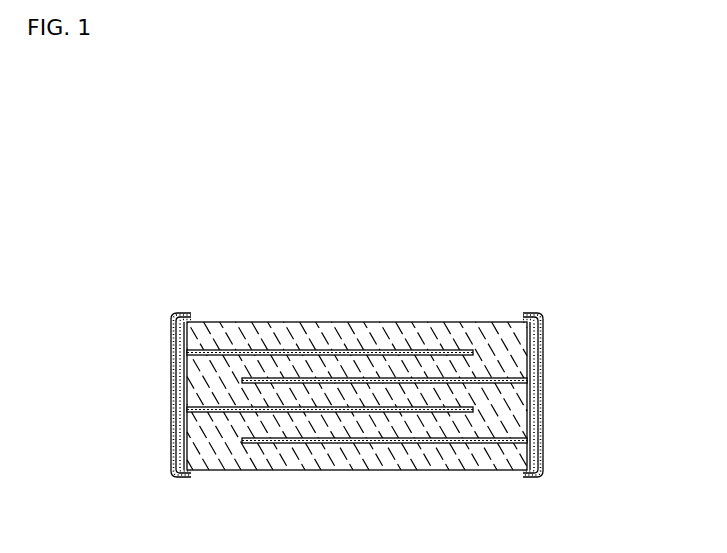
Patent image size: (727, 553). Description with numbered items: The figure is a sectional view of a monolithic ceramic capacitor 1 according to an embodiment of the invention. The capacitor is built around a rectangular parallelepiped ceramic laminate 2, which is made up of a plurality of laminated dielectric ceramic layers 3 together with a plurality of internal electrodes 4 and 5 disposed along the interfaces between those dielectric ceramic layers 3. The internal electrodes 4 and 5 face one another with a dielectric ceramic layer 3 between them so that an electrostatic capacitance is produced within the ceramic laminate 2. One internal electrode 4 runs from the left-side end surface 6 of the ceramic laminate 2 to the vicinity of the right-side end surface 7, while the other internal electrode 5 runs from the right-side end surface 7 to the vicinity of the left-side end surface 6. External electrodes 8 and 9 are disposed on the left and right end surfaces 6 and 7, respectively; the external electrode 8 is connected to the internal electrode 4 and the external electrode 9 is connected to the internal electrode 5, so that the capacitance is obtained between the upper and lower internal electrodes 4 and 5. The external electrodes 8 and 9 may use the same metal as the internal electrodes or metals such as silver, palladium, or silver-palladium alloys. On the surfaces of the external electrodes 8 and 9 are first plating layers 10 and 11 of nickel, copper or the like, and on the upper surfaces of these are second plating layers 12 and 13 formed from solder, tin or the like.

The monolithic ceramic capacitor 1 is at (400, 318).
The ceramic laminate 2 is at (317, 472).
The dielectric ceramic layer 3 is at (359, 272).
The internal electrode 4 is at (256, 283).
The internal electrode 5 is at (407, 381).
The left-side end surface 6 is at (187, 457).
The right-side end surface 7 is at (523, 443).
The external electrode 8 is at (183, 356).
The external electrode 9 is at (540, 348).
The first plating layer 10 is at (183, 405).
The first plating layer 11 is at (540, 400).
The second plating layer 12 is at (173, 457).
The second plating layer 13 is at (543, 447).